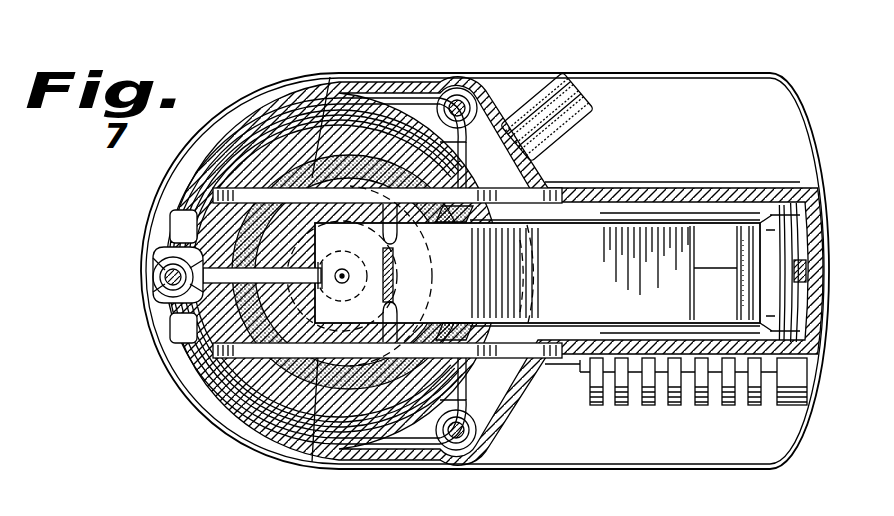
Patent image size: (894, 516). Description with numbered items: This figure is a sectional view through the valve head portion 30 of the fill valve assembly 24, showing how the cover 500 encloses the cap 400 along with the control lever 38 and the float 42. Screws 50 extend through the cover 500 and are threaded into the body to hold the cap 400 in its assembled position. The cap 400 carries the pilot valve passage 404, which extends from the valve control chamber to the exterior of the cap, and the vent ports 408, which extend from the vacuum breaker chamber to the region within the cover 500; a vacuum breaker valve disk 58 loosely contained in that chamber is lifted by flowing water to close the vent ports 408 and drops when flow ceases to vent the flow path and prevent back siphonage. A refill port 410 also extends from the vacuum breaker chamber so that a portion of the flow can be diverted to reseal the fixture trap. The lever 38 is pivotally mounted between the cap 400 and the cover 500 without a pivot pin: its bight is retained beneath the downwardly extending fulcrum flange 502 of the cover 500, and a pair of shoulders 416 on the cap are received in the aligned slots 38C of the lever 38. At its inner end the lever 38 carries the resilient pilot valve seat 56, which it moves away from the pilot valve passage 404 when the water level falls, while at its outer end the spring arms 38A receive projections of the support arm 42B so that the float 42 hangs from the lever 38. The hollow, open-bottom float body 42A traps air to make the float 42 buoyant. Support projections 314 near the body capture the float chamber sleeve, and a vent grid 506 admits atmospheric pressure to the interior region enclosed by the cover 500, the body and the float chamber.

The fill valve assembly 24 is at (143, 406).
The valve head portion 30 is at (190, 437).
The control lever 38 is at (628, 216).
The spring arms 38A is at (720, 213).
The aligned slots 38C is at (357, 240).
The float 42 is at (760, 242).
The float body 42A is at (773, 297).
The support arm 42B is at (723, 268).
The screws 50 is at (457, 95).
The pilot valve seat 56 is at (322, 375).
The vacuum breaker valve disk 58 is at (240, 250).
The support projections 314 is at (382, 511).
The cap 400 is at (214, 170).
The pilot valve passage 404 is at (302, 178).
The vent ports 408 is at (330, 77).
The refill port 410 is at (548, 88).
The shoulders 416 is at (390, 240).
The cover 500 is at (718, 71).
The fulcrum flange 502 is at (393, 292).
The vent grid 506 is at (663, 393).